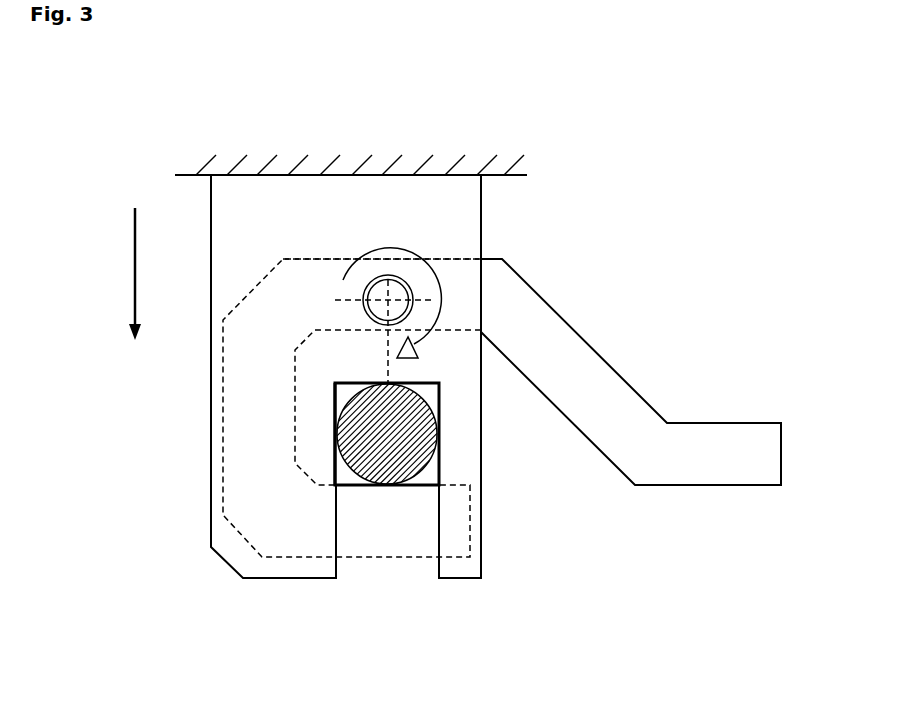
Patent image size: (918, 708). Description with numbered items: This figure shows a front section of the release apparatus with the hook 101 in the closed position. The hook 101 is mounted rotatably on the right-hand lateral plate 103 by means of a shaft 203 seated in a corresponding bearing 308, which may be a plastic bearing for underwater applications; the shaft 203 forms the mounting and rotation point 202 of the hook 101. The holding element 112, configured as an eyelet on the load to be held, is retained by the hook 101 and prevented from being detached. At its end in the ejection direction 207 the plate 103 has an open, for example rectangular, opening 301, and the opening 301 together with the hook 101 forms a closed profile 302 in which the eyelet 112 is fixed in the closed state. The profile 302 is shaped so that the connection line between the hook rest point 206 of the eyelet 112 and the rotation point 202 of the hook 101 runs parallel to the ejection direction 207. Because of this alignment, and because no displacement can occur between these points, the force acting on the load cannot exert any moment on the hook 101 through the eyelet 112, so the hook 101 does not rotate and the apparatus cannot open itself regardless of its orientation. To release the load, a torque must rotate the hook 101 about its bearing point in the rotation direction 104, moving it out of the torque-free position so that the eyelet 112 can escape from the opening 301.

The hook 101 is at (295, 280).
The lateral plate 103 is at (223, 208).
The rotation direction 104 is at (427, 271).
The holding element 112 is at (418, 455).
The mounting and rotation point 202 is at (388, 300).
The shaft 203 is at (382, 289).
The hook rest point 206 is at (392, 485).
The ejection direction 207 is at (134, 252).
The opening 301 is at (428, 390).
The closed profile 302 is at (335, 463).
The bearing 308 is at (384, 274).